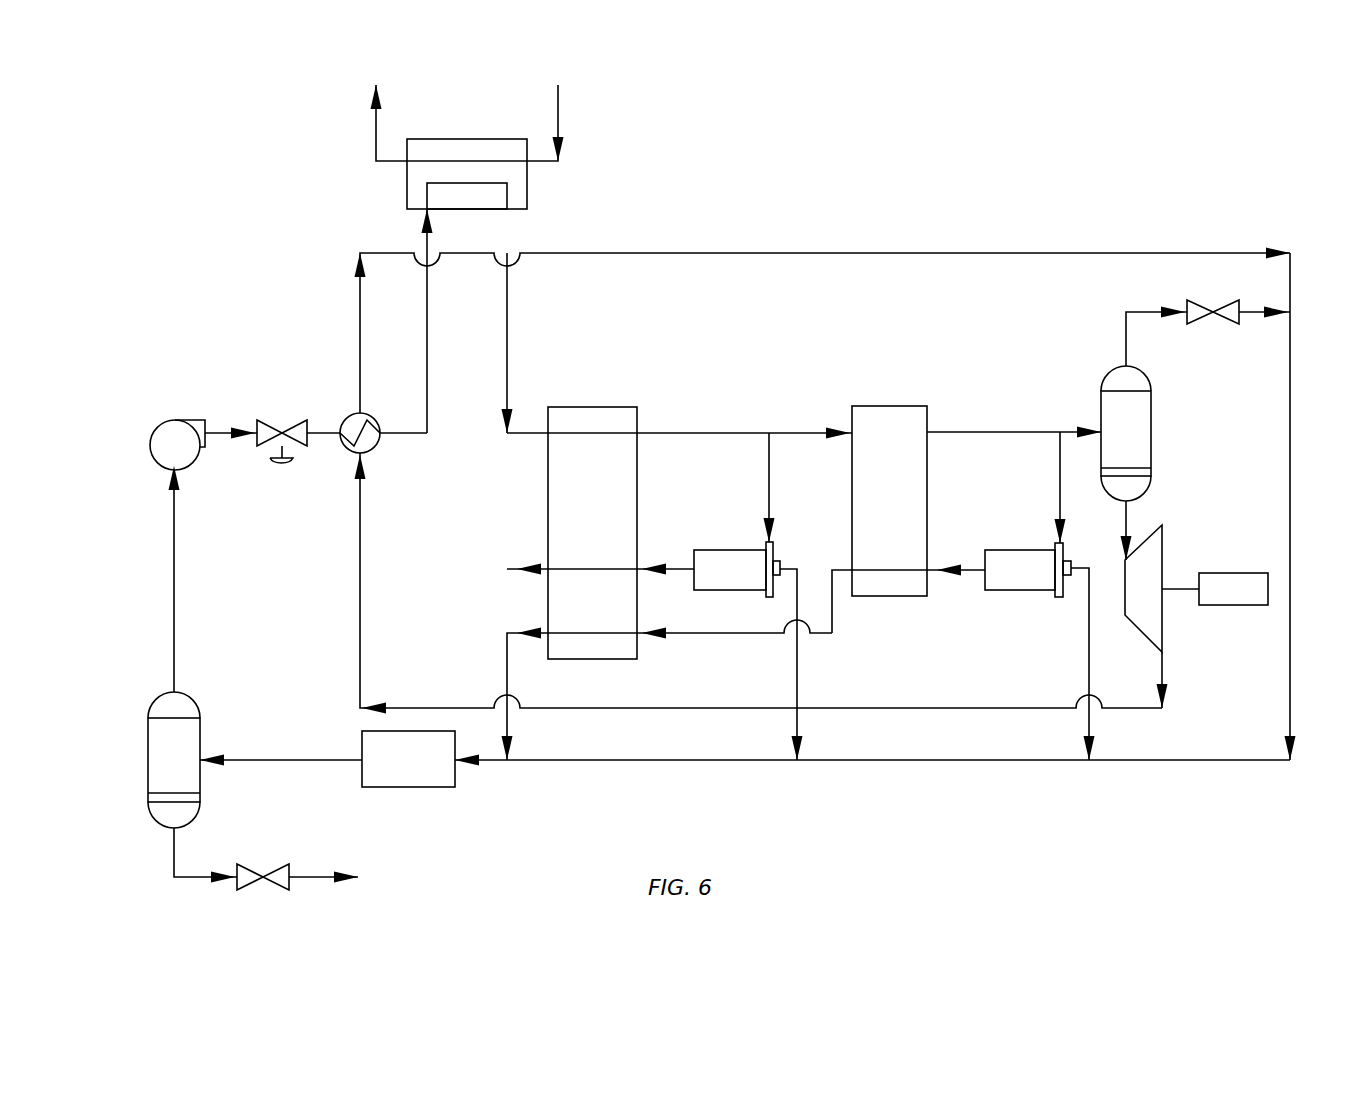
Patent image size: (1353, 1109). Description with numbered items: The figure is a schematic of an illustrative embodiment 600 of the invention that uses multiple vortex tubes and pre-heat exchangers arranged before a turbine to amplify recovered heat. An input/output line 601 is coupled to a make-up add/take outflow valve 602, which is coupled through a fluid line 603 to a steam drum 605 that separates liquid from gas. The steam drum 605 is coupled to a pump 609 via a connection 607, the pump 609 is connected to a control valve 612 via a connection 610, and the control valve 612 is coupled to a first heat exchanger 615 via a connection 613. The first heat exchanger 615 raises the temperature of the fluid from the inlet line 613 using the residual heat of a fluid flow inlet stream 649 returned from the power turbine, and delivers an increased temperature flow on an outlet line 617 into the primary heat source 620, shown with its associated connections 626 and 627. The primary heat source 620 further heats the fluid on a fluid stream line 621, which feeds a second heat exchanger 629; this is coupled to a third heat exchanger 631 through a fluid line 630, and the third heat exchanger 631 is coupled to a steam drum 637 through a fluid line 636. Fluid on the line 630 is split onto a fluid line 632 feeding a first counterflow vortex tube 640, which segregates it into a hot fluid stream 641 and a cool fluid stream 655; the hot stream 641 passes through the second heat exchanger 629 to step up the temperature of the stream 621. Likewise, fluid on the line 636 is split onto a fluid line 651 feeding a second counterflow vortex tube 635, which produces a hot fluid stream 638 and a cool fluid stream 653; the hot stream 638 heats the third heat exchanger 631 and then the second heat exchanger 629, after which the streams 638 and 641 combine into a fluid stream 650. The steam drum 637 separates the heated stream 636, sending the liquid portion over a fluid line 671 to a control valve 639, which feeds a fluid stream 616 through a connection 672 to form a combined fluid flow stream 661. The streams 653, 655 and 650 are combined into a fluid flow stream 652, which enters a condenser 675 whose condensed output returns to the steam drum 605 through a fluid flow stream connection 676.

The system 600 is at (834, 184).
The input/output line 601 is at (310, 877).
The make-up add/take outflow valve 602 is at (247, 870).
The fluid line 603 is at (177, 852).
The steam drum 605 is at (202, 730).
The connection 607 is at (174, 575).
The pump 609 is at (160, 418).
The connection 610 is at (217, 433).
The control valve 612 is at (273, 468).
The connection 613 is at (325, 430).
The first heat exchanger 615 is at (373, 450).
The fluid stream 616 is at (360, 330).
The outlet line 617 is at (427, 340).
The primary heat source 620 is at (460, 139).
The fluid stream line 621 is at (507, 340).
The inlet stream 626 is at (558, 110).
The outlet stream 627 is at (376, 135).
The second heat exchanger 629 is at (587, 407).
The fluid line 630 is at (685, 433).
The third heat exchanger 631 is at (893, 406).
The fluid line 632 is at (769, 487).
The second counterflow vortex tube 635 is at (1021, 590).
The fluid line 636 is at (978, 432).
The steam drum 637 is at (1151, 432).
The hot fluid stream 638 is at (832, 597).
The control valve 639 is at (1200, 327).
The first counterflow vortex tube 640 is at (730, 550).
The hot fluid stream 641 is at (540, 568).
The fluid flow inlet stream 649 is at (360, 580).
The fluid stream 650 is at (507, 665).
The fluid line 651 is at (1060, 487).
The fluid flow stream 652 is at (490, 762).
The cool fluid stream 653 is at (1089, 628).
The cool fluid stream 655 is at (797, 653).
The combined fluid flow stream 661 is at (1290, 677).
The fluid line 671 is at (1150, 310).
The connection 672 is at (1258, 310).
The condenser 675 is at (408, 787).
The fluid flow stream connection 676 is at (302, 760).